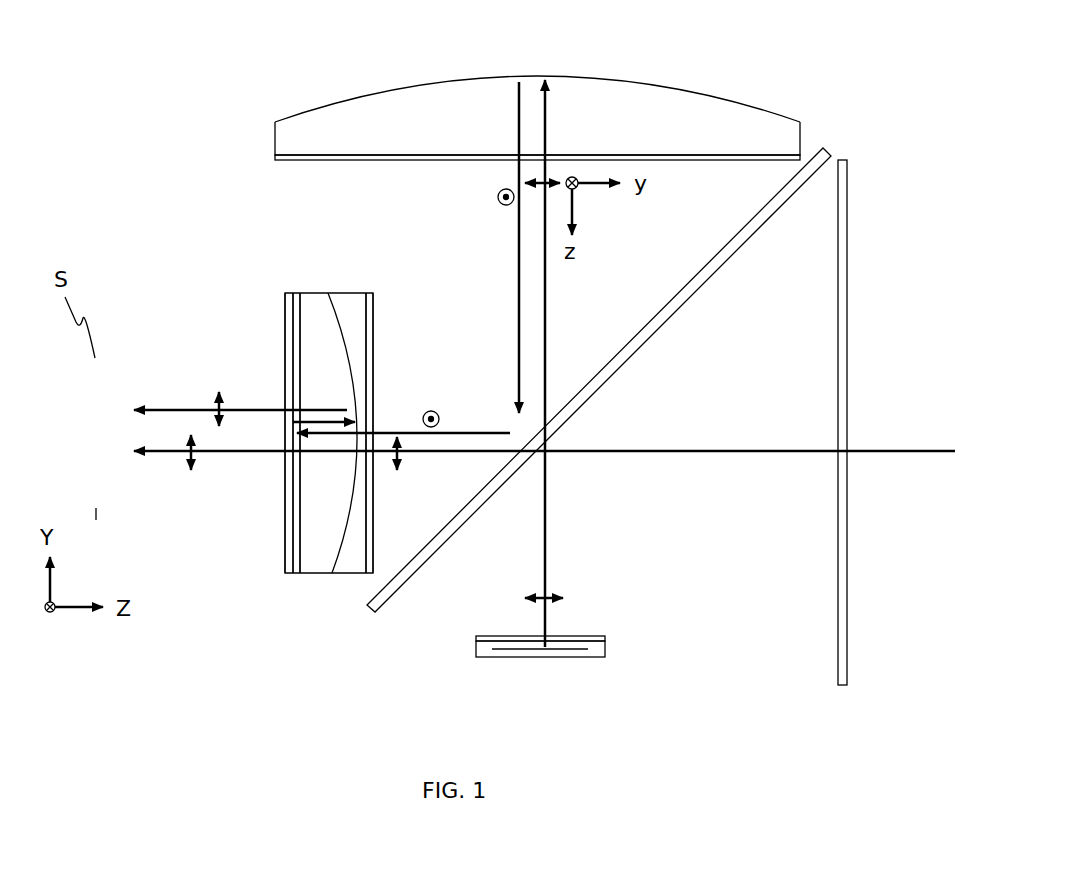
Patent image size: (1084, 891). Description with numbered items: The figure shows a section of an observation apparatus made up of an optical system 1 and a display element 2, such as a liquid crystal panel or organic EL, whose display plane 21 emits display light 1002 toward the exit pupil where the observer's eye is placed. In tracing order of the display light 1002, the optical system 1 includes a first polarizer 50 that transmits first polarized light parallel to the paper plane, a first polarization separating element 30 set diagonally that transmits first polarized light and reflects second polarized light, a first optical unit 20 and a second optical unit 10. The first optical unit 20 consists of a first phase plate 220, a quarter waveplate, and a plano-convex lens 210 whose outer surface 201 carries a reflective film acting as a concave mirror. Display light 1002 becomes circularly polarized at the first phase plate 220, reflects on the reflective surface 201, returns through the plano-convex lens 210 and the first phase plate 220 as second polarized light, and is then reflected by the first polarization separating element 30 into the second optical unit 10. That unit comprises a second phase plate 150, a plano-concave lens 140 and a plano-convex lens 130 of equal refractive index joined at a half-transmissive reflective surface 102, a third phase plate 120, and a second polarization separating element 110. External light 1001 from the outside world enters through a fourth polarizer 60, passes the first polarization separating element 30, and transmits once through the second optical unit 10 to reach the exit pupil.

The optical system 1 is at (118, 62).
The first optical unit 20 is at (147, 77).
The reflective surface 201 is at (303, 110).
The plano-convex lens 210 is at (277, 123).
The first phase plate 220 is at (277, 158).
The second optical unit 10 is at (375, 258).
The half-transmissive reflective surface 102 is at (331, 298).
The second polarization separating element 110 is at (290, 573).
The third phase plate 120 is at (297, 573).
The plano-convex lens 130 is at (327, 562).
The plano-concave lens 140 is at (353, 562).
The second phase plate 150 is at (368, 573).
The first polarization separating element 30 is at (833, 160).
The fourth polarizer 60 is at (838, 678).
The external light 1001 is at (858, 449).
The display light 1002 is at (547, 573).
The display element 2 is at (513, 655).
The first polarizer 50 is at (497, 638).
The display plane 21 is at (587, 649).